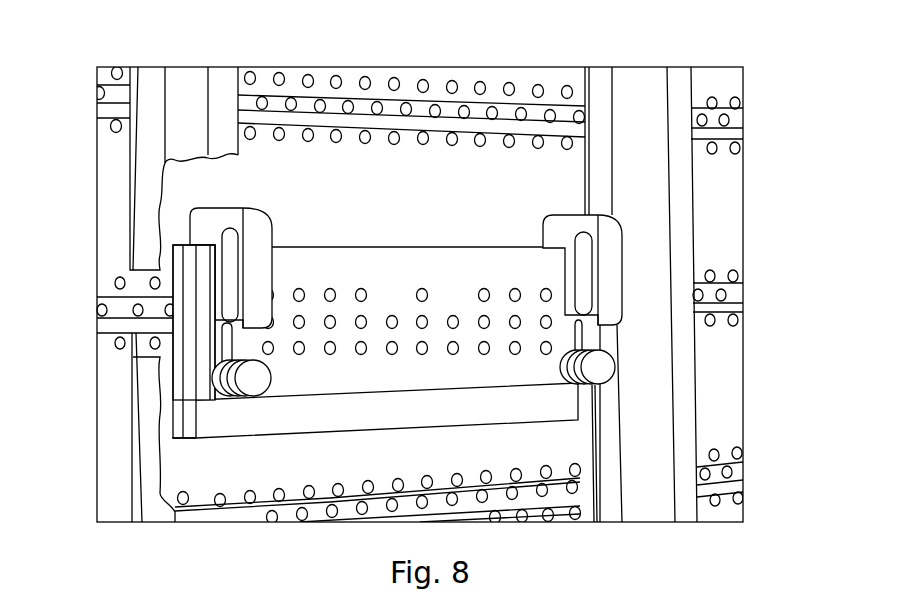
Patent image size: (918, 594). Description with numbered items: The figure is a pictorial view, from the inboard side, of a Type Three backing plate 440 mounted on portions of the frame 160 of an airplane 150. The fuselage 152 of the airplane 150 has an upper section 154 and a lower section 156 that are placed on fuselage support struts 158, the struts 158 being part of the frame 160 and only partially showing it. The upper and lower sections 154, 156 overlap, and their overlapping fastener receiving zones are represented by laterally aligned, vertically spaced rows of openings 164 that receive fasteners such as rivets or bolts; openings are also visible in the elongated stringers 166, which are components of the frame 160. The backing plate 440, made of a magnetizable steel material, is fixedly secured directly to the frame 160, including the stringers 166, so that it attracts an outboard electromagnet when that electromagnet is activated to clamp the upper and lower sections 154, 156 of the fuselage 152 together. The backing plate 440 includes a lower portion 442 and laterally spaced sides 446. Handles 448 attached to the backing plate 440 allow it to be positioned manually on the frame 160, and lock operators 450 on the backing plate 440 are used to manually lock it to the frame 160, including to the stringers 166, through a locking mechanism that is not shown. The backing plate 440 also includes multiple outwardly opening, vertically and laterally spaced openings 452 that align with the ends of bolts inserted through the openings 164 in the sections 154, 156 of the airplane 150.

The airplane 150 is at (743, 233).
The fuselage 152 is at (553, 75).
The upper section 154 is at (738, 87).
The lower section 156 is at (743, 167).
The fuselage support struts 158 is at (193, 72).
The frame 160 is at (130, 157).
The openings 164 is at (262, 96).
The stringers 166 is at (100, 327).
The backing plate 440 is at (496, 247).
The lower portion 442 is at (396, 421).
The sides 446 is at (183, 257).
The handles 448 is at (273, 266).
The lock operators 450 is at (272, 380).
The openings 452 is at (452, 342).